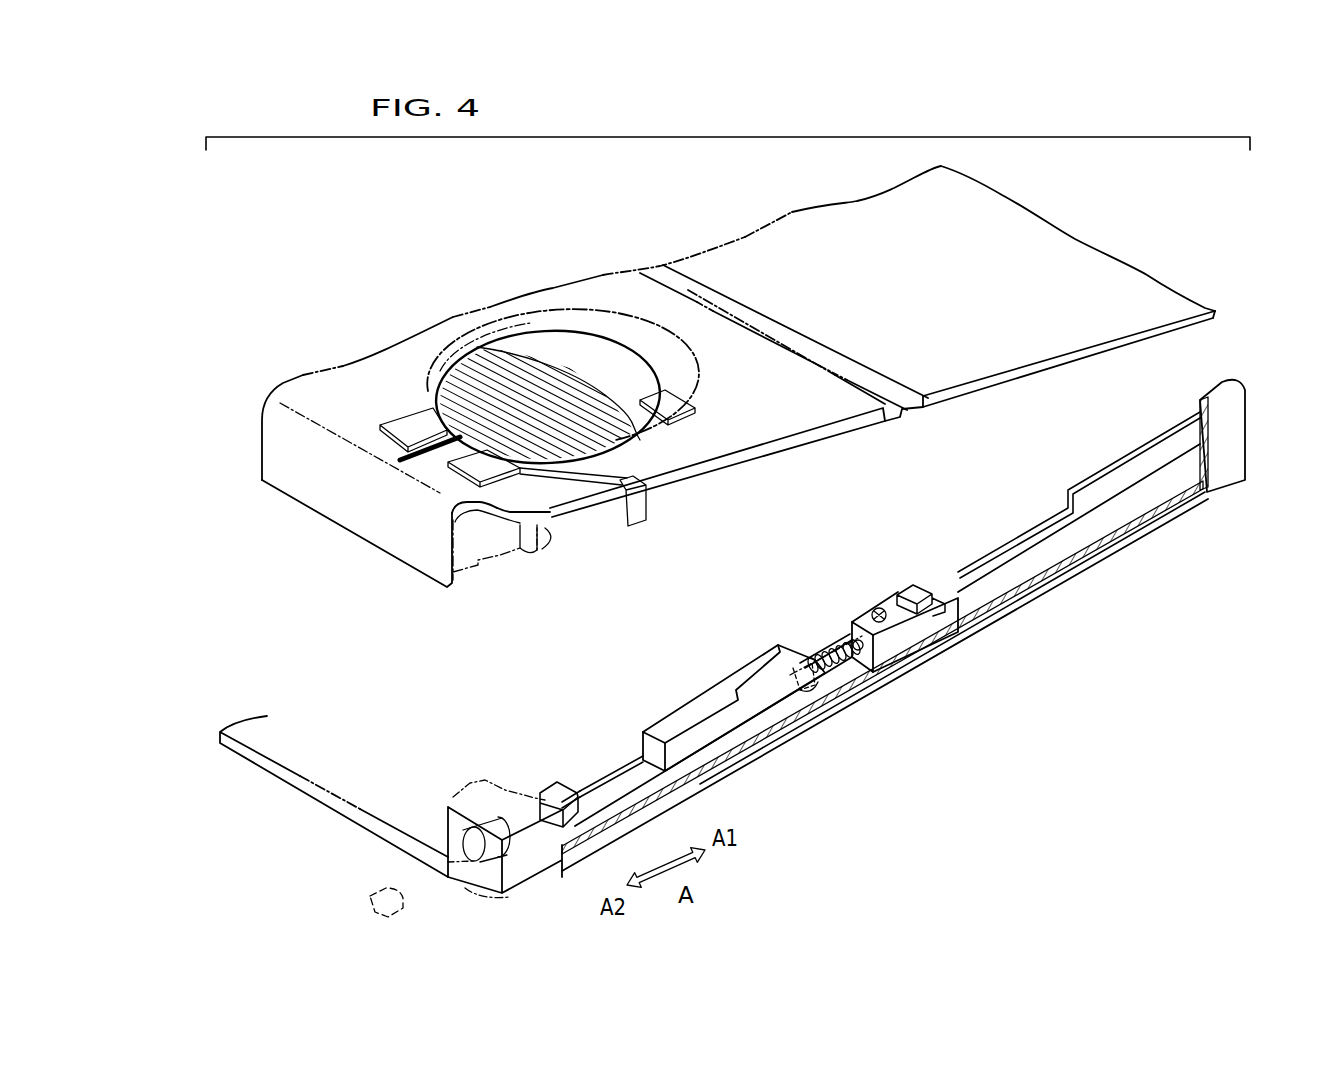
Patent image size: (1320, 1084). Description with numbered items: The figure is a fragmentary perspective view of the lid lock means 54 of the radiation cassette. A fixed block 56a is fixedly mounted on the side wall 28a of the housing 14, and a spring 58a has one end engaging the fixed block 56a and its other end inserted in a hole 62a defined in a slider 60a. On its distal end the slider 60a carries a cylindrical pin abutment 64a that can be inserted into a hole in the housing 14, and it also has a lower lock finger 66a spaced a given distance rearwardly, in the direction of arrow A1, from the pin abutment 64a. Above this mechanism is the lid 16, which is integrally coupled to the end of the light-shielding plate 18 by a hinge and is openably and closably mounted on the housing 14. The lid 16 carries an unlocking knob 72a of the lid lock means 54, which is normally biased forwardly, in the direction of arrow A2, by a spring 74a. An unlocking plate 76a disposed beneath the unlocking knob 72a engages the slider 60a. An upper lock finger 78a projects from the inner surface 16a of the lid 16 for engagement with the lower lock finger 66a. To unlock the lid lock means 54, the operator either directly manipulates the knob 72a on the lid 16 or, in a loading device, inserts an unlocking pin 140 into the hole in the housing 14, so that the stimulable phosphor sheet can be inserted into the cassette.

The housing 14 is at (883, 705).
The lid 16 is at (554, 285).
The inner surface 16a is at (781, 455).
The light-shielding plate 18 is at (961, 187).
The side wall 28a is at (1058, 577).
The lid lock means 54 is at (710, 803).
The fixed block 56a is at (900, 641).
The spring 58a is at (833, 644).
The slider 60a is at (668, 720).
The hole 62a is at (812, 688).
The cylindrical pin abutment 64a is at (468, 840).
The lower lock finger 66a is at (560, 792).
The unlocking knob 72a is at (448, 378).
The spring 74a is at (412, 462).
The unlocking plate 76a is at (650, 514).
The upper lock finger 78a is at (543, 551).
The unlocking pin 140 is at (376, 897).